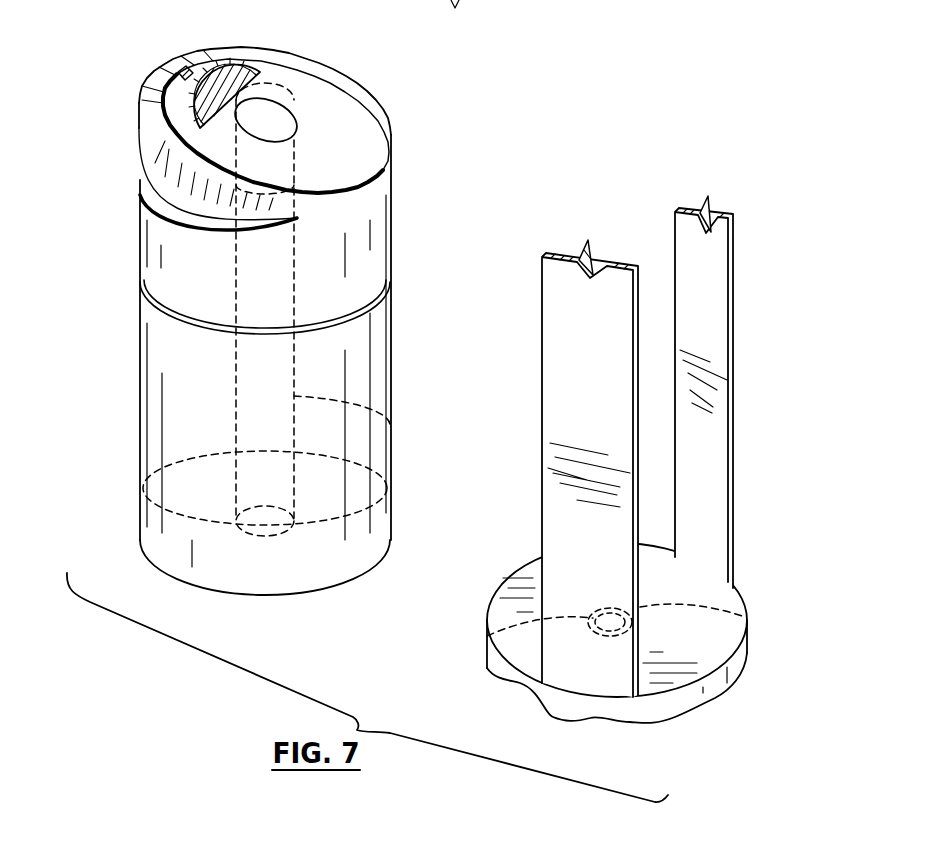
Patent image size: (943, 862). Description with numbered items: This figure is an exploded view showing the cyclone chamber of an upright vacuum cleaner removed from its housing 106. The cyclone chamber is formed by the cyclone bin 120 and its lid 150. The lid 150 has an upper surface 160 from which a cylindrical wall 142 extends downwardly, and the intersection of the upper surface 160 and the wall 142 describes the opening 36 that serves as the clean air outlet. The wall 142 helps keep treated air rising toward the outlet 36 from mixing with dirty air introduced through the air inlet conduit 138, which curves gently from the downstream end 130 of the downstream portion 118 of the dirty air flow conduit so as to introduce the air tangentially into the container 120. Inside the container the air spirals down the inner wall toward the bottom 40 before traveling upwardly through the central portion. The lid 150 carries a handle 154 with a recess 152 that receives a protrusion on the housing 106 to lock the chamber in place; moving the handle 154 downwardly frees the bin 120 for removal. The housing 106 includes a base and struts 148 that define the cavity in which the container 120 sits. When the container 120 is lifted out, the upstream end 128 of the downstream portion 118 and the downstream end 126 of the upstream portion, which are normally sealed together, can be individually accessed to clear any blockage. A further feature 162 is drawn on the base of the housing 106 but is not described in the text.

The outlet 36 is at (284, 120).
The bottom 40 is at (360, 536).
The housing 106 is at (779, 459).
The downstream portion 118 is at (392, 423).
The cyclone bin 120 is at (391, 348).
The downstream end 126 is at (750, 617).
The upstream end 128 is at (388, 485).
The downstream end 130 is at (297, 207).
The air inlet conduit 138 is at (286, 95).
The cylindrical wall 142 is at (294, 167).
The struts 148 is at (567, 501).
The lid 150 is at (368, 253).
The recess 152 is at (182, 66).
The handle 154 is at (172, 107).
The upper surface 160 is at (323, 151).
The hole 162 is at (489, 637).